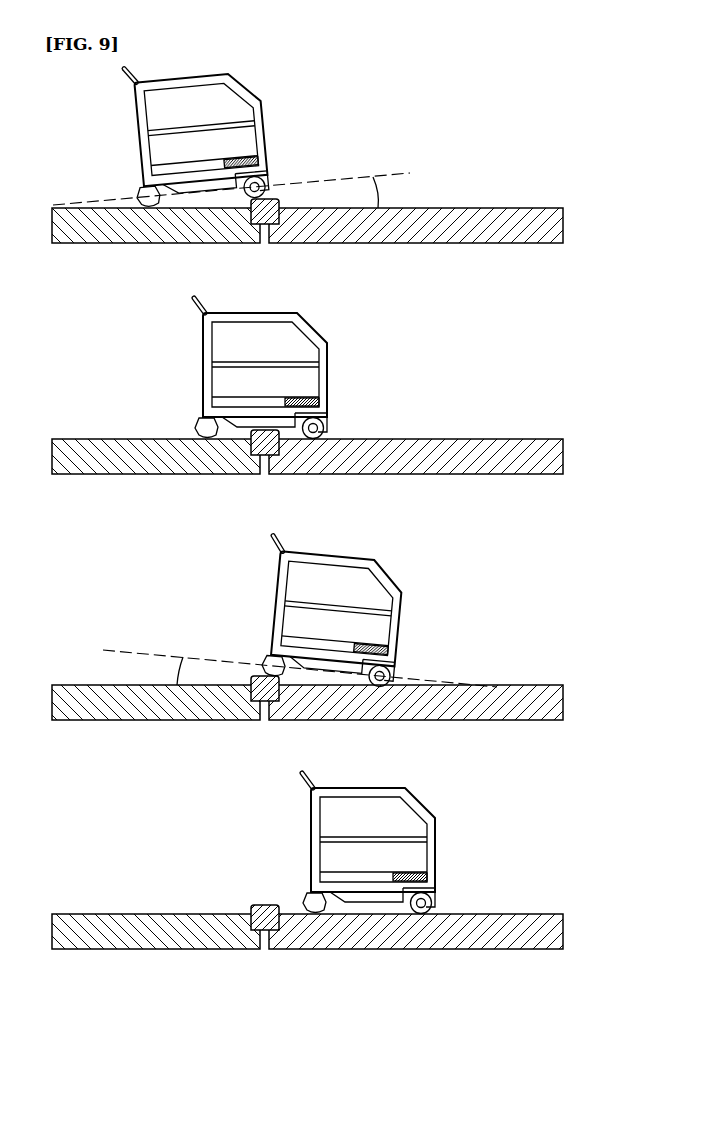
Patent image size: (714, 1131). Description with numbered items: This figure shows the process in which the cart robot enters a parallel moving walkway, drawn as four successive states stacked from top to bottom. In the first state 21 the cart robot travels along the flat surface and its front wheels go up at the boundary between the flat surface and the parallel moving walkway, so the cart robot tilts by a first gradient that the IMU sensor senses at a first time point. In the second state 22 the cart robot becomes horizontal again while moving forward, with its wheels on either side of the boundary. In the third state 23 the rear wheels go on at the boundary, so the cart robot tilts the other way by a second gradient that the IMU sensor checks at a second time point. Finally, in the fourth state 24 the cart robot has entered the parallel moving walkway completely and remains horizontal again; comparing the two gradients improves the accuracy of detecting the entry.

The first state of entering the parallel moving walkway 21 is at (514, 131).
The horizontal state while moving forward 22 is at (514, 362).
The state of rear wheels crossing the boundary 23 is at (514, 608).
The horizontal state after complete entry 24 is at (514, 837).